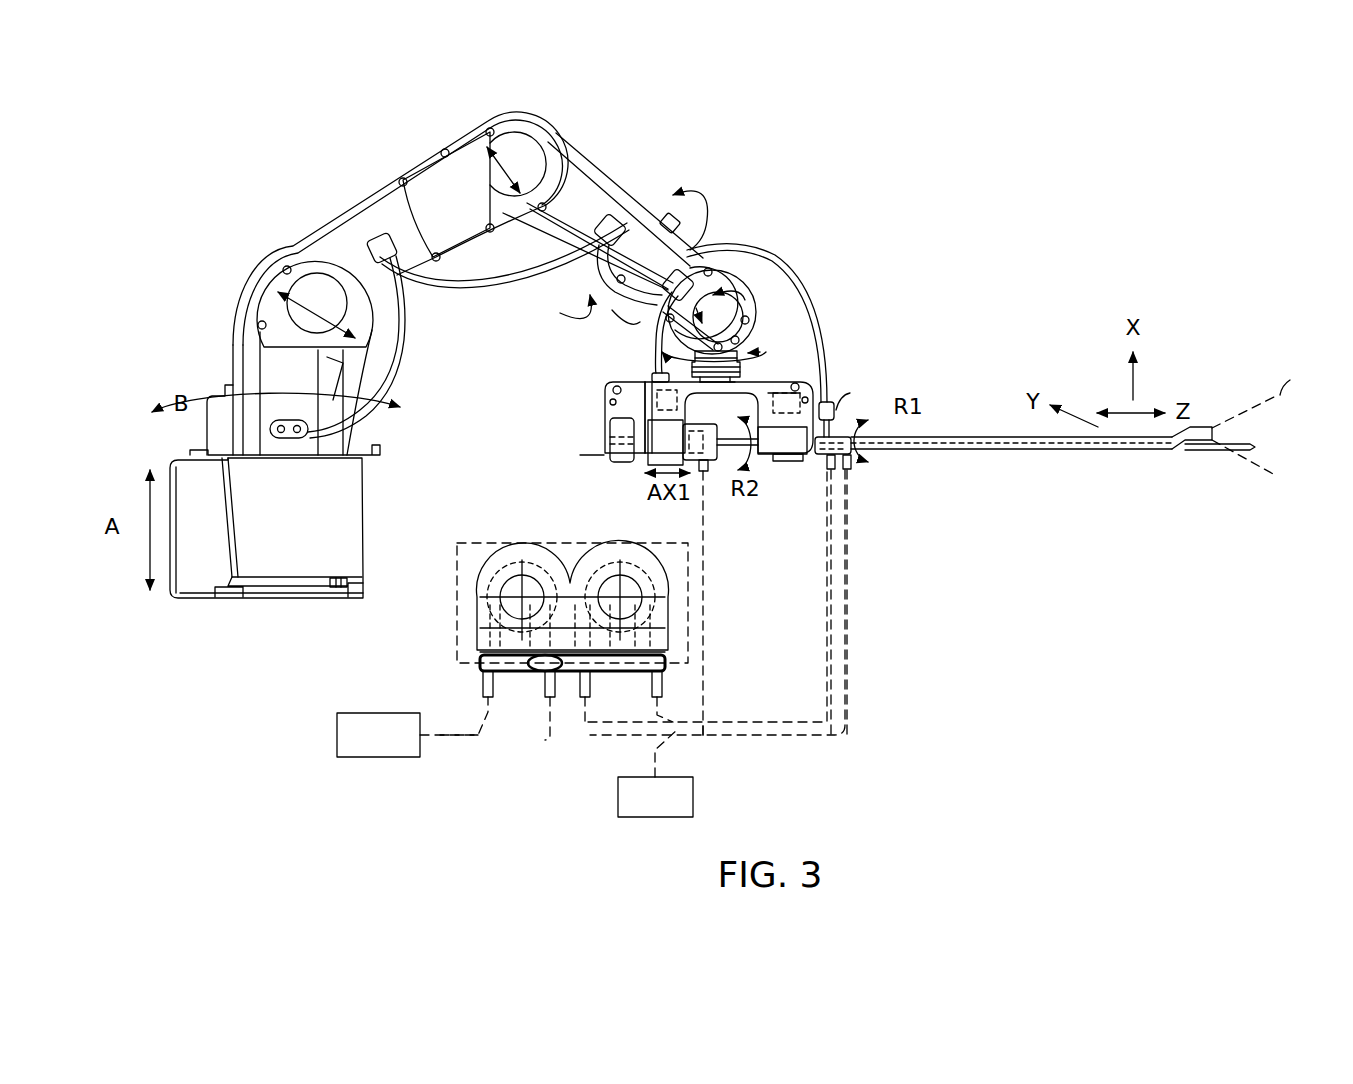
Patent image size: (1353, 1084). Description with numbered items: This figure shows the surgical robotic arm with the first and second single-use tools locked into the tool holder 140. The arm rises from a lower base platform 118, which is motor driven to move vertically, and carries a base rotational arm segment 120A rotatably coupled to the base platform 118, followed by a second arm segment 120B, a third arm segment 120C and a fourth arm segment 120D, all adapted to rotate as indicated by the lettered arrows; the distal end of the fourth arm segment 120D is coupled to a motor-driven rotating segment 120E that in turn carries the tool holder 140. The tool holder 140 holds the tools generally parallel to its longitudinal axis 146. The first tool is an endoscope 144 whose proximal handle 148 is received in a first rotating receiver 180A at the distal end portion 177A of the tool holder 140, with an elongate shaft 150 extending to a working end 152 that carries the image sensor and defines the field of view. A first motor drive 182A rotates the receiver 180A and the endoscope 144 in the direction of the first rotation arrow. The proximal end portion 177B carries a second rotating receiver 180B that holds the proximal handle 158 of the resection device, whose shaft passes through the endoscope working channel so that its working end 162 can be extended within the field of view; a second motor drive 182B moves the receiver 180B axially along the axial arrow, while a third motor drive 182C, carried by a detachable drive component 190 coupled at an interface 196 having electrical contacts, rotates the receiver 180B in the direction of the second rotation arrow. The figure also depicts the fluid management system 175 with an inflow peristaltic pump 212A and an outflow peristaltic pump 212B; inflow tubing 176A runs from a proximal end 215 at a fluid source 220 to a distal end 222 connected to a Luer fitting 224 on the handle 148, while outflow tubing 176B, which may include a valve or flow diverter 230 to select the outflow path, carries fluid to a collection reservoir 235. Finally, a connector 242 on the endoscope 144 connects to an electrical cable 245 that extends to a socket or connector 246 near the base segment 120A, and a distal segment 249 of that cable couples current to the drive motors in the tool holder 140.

The base platform 118 is at (378, 470).
The base rotational arm segment 120A is at (237, 345).
The second arm segment 120B is at (368, 222).
The third arm segment 120C is at (575, 190).
The fourth arm segment 120D is at (712, 235).
The rotating segment 120E is at (745, 345).
The tool holder 140 is at (808, 382).
The first tool (endoscope) 144 is at (1089, 421).
The longitudinal axis 146 is at (540, 418).
The proximal handle 148 is at (853, 450).
The elongate shaft 150 is at (1005, 450).
The working end 152 is at (1200, 425).
The proximal handle 158 is at (712, 485).
The working end 162 is at (1255, 446).
The fluid management system 175 is at (578, 665).
The inflow tubing 176A is at (585, 743).
The outflow tubing 176B is at (625, 745).
The distal end portion 177A is at (805, 395).
The proximal end portion 177B is at (600, 424).
The first rotating receiver 180A is at (780, 462).
The second rotating receiver 180B is at (660, 478).
The first motor drive 182A is at (836, 402).
The second motor drive 182B is at (652, 374).
The third motor drive 182C is at (650, 460).
The detachable drive component 190 is at (600, 388).
The interface 196 is at (615, 383).
The inflow peristaltic pump 212A is at (490, 595).
The outflow peristaltic pump 212B is at (655, 597).
The proximal end 215 is at (455, 740).
The fluid source 220 is at (412, 727).
The distal end 222 is at (847, 575).
The Luer fitting 224 is at (848, 470).
The valve or flow diverter 230 is at (695, 722).
The collection reservoir 235 is at (655, 773).
The connector 242 is at (837, 408).
The electrical cable 245 is at (810, 260).
The socket or connector 246 is at (270, 430).
The distal segment 249 is at (610, 318).